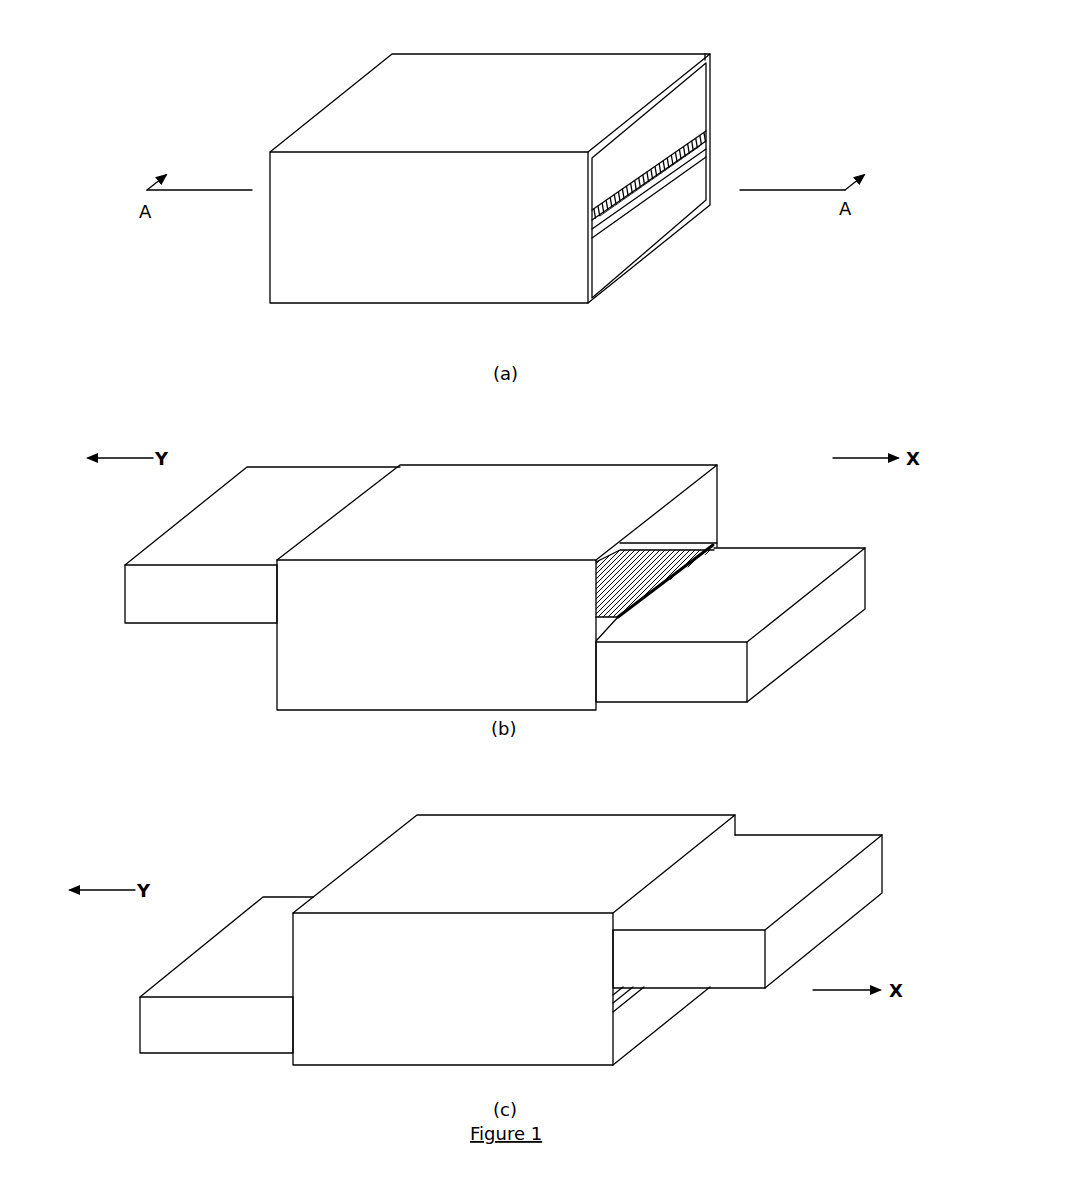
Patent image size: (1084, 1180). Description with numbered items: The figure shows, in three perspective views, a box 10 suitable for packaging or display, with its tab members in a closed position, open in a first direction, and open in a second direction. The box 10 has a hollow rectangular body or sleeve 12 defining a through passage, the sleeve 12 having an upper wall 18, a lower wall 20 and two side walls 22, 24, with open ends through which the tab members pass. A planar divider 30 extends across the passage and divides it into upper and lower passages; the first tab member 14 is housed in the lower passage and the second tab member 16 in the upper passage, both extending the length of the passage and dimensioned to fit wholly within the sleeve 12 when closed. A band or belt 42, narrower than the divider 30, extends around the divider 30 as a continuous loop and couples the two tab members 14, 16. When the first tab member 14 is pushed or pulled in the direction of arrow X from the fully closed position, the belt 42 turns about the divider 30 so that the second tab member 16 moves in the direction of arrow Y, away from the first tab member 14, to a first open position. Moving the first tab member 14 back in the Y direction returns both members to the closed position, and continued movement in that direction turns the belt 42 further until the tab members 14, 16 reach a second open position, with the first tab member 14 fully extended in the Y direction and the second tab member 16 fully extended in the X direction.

The box 10 is at (262, 118).
The sleeve 12 is at (490, 65).
The first tab member 14 is at (688, 210).
The second tab member 16 is at (697, 103).
The upper wall 18 is at (645, 483).
The lower wall 20 is at (596, 702).
The side wall 22 is at (702, 510).
The side wall 24 is at (308, 688).
The divider 30 is at (602, 220).
The belt 42 is at (647, 185).